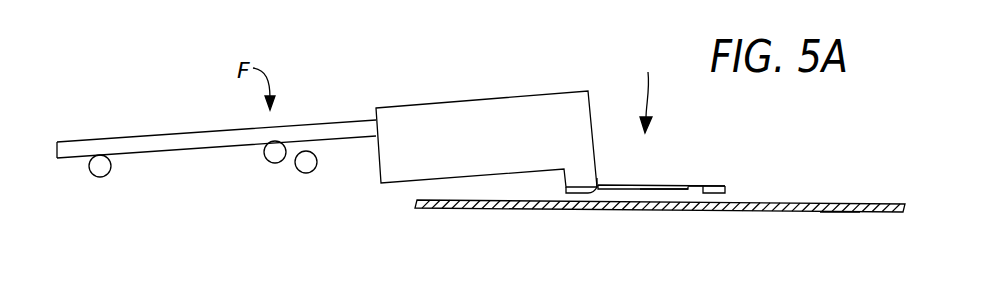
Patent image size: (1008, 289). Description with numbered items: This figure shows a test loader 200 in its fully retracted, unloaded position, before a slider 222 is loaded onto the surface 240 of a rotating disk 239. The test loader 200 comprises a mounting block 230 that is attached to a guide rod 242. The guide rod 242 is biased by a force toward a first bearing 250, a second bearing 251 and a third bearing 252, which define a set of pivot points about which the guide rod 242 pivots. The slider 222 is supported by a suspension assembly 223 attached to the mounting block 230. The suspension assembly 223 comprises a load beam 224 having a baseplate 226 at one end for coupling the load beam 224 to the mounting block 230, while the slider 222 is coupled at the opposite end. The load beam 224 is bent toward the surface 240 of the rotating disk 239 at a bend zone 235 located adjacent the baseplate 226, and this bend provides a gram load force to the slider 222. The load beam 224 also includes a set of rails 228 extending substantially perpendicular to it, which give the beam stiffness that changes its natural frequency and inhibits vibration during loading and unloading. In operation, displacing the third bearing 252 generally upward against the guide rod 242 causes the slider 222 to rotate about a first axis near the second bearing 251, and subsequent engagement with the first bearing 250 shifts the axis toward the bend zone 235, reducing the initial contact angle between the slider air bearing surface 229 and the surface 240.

The test loader 200 is at (318, 43).
The guide rod 242 is at (150, 135).
The third bearing 252 is at (100, 177).
The second bearing 251 is at (278, 163).
The first bearing 250 is at (316, 167).
The mounting block 230 is at (442, 108).
The bend zone 235 is at (598, 186).
The baseplate 226 is at (583, 193).
The load beam 224 is at (667, 185).
The rails 228 is at (658, 189).
The slider 222 is at (725, 186).
The slider air bearing surface 229 is at (727, 193).
The suspension assembly 223 is at (654, 90).
The surface 240 is at (855, 203).
The rotating disk 239 is at (840, 211).